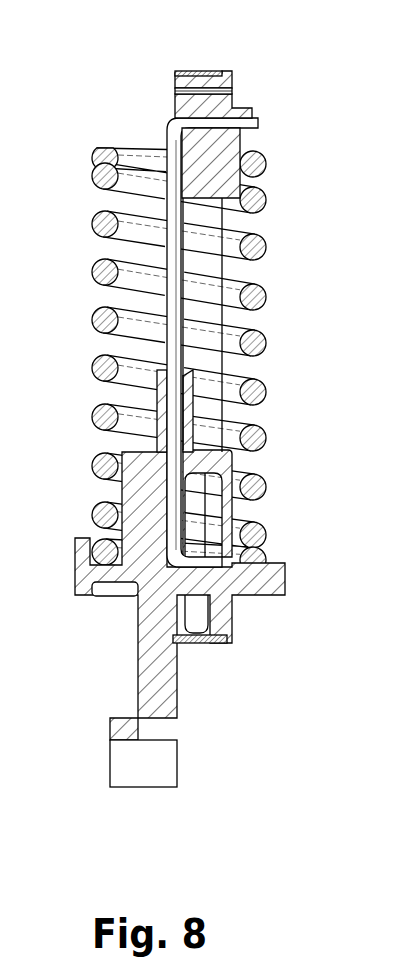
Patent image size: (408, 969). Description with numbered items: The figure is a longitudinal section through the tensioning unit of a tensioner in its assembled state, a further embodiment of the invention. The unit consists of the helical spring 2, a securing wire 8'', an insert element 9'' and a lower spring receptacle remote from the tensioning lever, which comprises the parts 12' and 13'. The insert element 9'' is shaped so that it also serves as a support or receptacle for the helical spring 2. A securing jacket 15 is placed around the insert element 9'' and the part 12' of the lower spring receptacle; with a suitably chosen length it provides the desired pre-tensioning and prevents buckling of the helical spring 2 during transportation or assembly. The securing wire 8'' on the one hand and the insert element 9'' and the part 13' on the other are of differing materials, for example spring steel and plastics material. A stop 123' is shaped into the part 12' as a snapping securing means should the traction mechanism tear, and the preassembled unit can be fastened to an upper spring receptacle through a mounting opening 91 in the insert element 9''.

The helical spring 2 is at (115, 370).
The securing jacket 15 is at (193, 360).
The part of the lower spring receptacle 12' is at (180, 619).
The stop 123' is at (275, 503).
The part of the lower spring receptacle 13' is at (262, 411).
The securing wire 8'' is at (269, 342).
The insert element 9'' is at (248, 108).
The mounting opening 91 is at (233, 91).